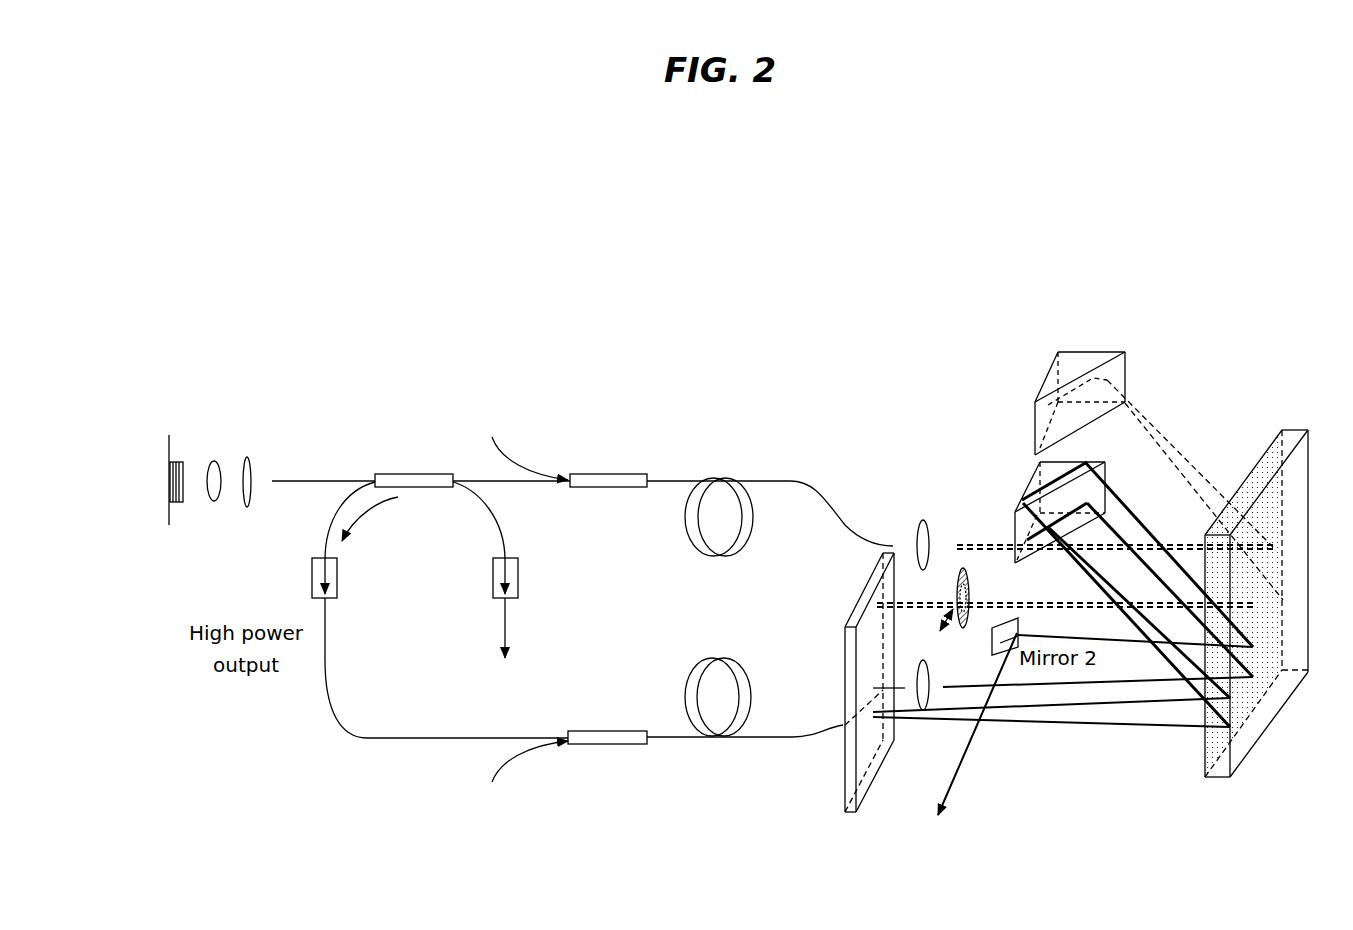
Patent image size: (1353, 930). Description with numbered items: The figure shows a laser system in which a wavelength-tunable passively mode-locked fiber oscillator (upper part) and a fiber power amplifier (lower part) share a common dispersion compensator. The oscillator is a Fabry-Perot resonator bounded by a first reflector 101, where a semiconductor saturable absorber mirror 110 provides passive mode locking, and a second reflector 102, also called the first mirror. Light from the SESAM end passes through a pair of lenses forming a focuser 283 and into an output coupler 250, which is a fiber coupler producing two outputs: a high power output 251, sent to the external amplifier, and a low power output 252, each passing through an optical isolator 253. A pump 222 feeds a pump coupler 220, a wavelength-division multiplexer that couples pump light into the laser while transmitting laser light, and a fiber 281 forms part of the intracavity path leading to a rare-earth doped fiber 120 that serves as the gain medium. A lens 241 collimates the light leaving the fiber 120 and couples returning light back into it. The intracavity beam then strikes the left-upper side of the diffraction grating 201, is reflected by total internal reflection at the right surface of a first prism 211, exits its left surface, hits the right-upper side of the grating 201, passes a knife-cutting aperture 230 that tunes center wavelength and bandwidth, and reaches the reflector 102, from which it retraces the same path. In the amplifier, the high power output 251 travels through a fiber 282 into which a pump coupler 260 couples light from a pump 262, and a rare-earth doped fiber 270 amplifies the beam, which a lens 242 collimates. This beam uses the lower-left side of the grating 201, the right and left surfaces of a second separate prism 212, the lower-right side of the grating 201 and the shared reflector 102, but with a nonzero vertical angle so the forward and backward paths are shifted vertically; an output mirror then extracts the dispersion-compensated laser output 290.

The first reflector 101 is at (170, 502).
The semiconductor saturable absorber mirror (SESAM) 110 is at (184, 462).
The focuser 283 is at (240, 513).
The output coupler 250 is at (412, 452).
The high power output 251 is at (371, 521).
The optical isolator 253 is at (415, 601).
The low power output 252 is at (569, 650).
The pump 222 is at (511, 425).
The pump coupler 220 is at (608, 448).
The fiber 281 is at (670, 481).
The rare-earth doped fiber 120 is at (718, 481).
The fiber 282 is at (408, 738).
The pump 262 is at (511, 799).
The pump coupler 260 is at (607, 767).
The rare-earth doped fiber 270 is at (718, 737).
The second reflector 102 is at (848, 770).
The lens 241 is at (905, 525).
The lens 242 is at (920, 690).
The aperture 230 is at (940, 611).
The laser output 290 is at (1019, 737).
The first prism 211 is at (1036, 403).
The second separate prism 212 is at (1025, 503).
The diffraction grating 201 is at (1256, 564).